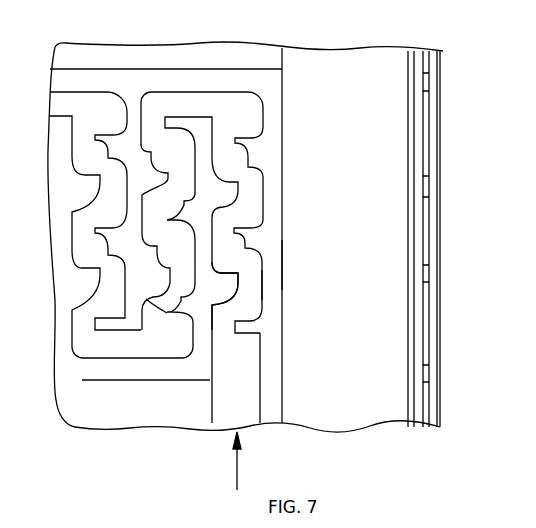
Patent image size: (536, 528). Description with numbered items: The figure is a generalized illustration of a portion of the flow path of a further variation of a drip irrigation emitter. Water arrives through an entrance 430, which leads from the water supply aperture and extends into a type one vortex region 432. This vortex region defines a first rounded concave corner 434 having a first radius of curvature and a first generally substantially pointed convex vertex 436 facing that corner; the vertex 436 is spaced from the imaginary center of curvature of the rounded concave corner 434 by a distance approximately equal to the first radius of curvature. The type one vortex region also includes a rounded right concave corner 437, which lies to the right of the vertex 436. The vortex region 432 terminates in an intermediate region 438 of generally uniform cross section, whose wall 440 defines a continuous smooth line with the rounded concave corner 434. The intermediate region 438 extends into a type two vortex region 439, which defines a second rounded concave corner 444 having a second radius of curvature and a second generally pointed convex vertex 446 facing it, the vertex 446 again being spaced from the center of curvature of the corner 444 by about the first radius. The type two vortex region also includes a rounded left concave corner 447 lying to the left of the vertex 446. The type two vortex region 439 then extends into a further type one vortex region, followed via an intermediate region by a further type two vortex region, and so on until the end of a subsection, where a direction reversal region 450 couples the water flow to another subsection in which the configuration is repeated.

The direction reversal region 450 is at (186, 104).
The type two vortex region 439 is at (227, 250).
The left concave corner 447 is at (248, 243).
The second generally pointed convex vertex 446 is at (256, 255).
The intermediate region 438 is at (260, 257).
The wall 440 is at (216, 268).
The second rounded concave corner 444 is at (262, 263).
The right concave corner 437 is at (262, 288).
The first generally substantially pointed convex vertex 436 is at (215, 303).
The type one vortex region 432 is at (236, 304).
The first rounded concave corner 434 is at (240, 330).
The entrance 430 is at (250, 345).